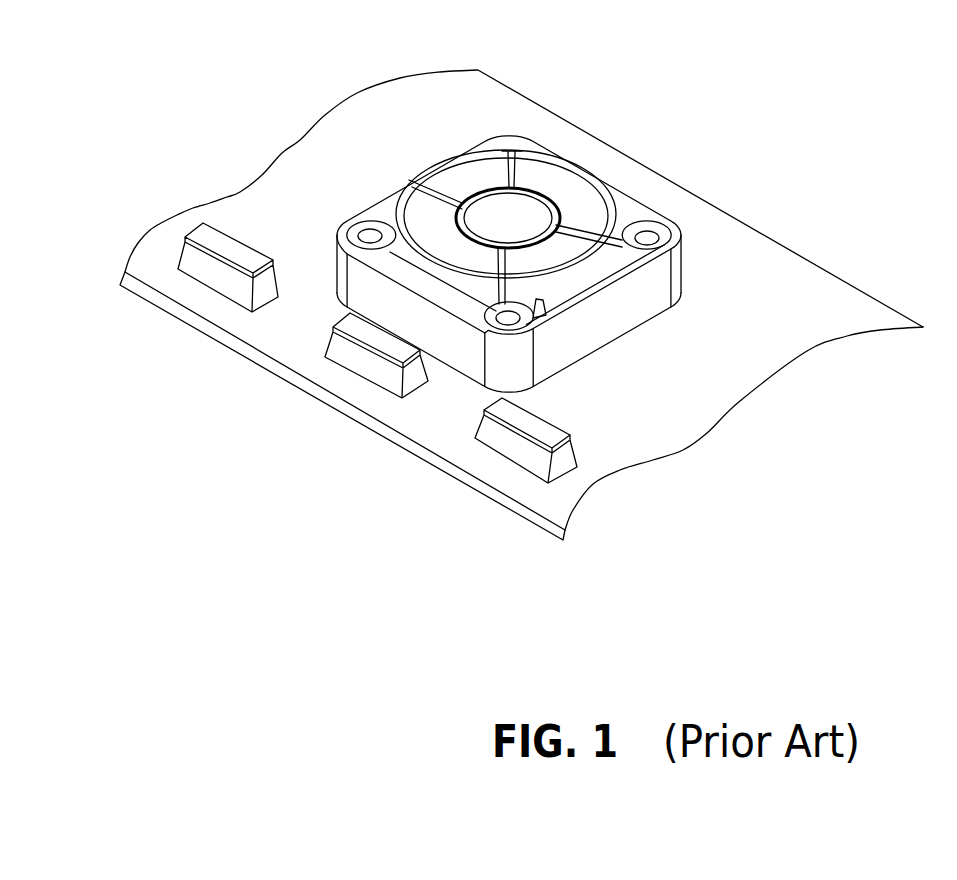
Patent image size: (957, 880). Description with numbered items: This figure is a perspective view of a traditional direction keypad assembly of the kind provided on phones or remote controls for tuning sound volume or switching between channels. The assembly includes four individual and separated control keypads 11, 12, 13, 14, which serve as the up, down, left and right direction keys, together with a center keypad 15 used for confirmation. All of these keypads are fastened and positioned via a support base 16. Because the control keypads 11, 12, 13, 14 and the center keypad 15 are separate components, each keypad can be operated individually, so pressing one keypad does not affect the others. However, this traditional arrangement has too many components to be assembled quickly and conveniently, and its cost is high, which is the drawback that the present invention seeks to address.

The control keypad 11 is at (539, 233).
The control keypad 12 is at (616, 264).
The control keypad 13 is at (402, 233).
The control keypad 14 is at (447, 185).
The center keypad 15 is at (487, 193).
The support base 16 is at (630, 297).